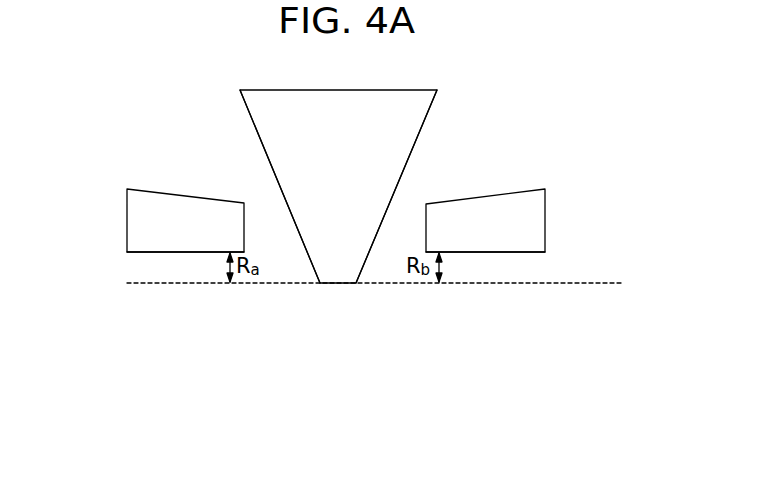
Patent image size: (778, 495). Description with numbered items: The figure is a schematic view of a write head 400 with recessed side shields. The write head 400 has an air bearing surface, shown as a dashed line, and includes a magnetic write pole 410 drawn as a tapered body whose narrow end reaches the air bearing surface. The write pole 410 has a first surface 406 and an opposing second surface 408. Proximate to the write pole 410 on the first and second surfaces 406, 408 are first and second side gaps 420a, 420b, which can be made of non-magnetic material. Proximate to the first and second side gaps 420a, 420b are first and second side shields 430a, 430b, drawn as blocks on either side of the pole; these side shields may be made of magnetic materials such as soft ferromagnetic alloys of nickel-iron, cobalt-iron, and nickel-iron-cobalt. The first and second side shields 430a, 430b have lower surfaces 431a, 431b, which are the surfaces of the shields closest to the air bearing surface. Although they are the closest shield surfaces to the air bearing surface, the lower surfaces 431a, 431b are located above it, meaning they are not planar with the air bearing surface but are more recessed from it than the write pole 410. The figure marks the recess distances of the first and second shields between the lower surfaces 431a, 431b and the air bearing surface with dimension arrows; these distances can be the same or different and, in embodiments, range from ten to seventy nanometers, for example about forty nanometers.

The write head 400 is at (497, 80).
The magnetic write pole 410 is at (338, 186).
The first side gap 420a is at (268, 222).
The second side gap 420b is at (408, 221).
The first side shield 430a is at (185, 220).
The second side shield 430b is at (485, 220).
The lower surface of first side shield 431a is at (160, 263).
The lower surface of second side shield 431b is at (517, 263).
The first surface of write pole 406 is at (292, 266).
The second surface of write pole 408 is at (382, 260).